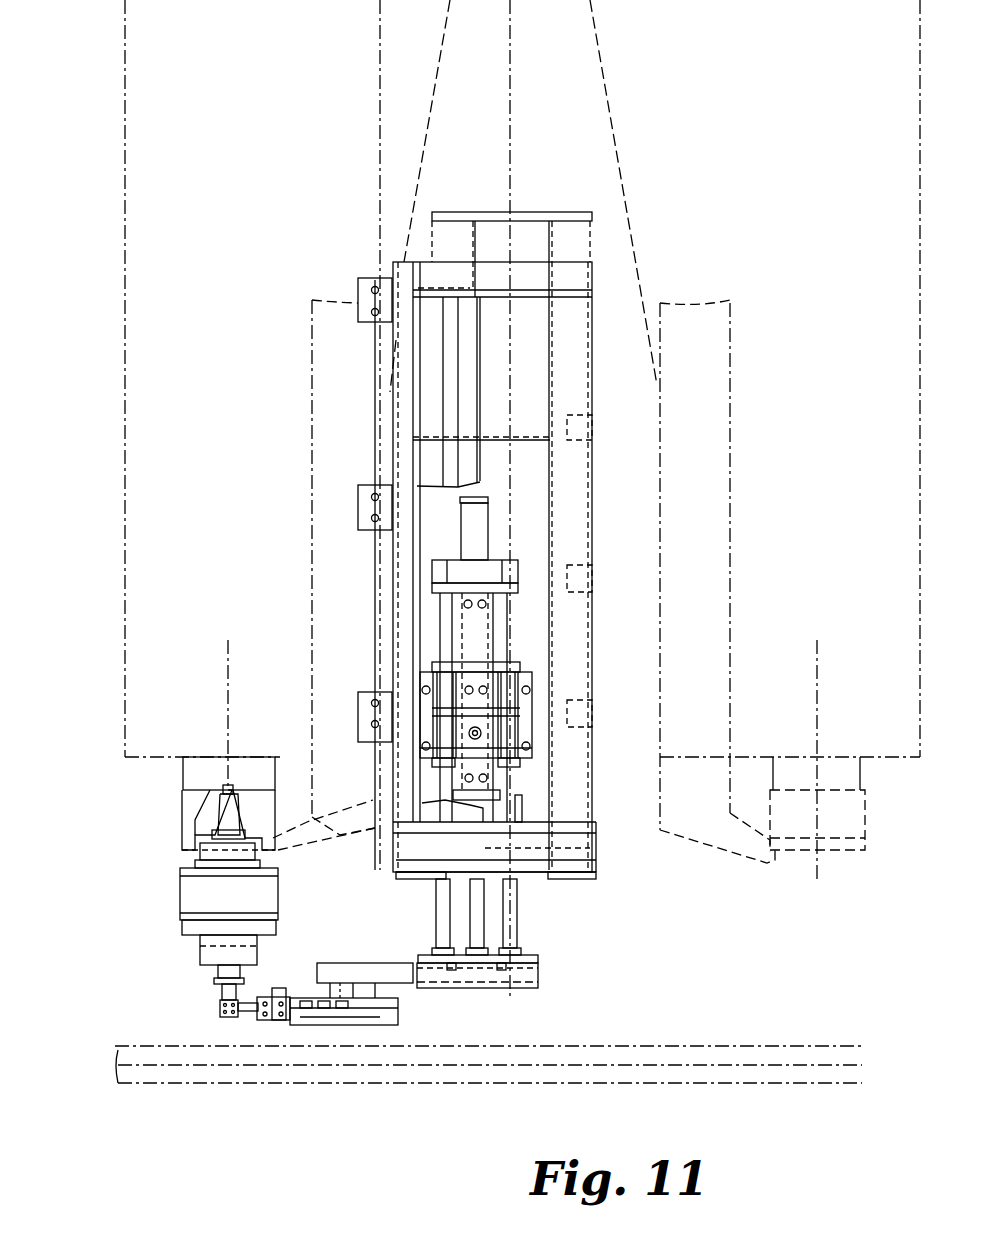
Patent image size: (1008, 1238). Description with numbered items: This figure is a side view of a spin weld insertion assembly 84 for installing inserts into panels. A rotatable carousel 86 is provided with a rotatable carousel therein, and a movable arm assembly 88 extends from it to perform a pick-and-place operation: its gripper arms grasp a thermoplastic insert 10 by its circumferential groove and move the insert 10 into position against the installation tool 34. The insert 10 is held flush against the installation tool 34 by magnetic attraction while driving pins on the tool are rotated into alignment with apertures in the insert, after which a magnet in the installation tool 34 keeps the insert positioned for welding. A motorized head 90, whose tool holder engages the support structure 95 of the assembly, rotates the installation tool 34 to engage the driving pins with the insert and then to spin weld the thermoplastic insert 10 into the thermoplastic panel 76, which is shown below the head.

The thermoplastic insert 10 is at (220, 1005).
The installation tool 34 is at (215, 970).
The thermoplastic panel 76 is at (187, 1092).
The spin weld insertion assembly 84 is at (108, 631).
The rotatable carousel 86 is at (566, 883).
The movable arm assembly 88 is at (323, 1032).
The motorized head 90 is at (180, 878).
The support structure 95 is at (185, 773).